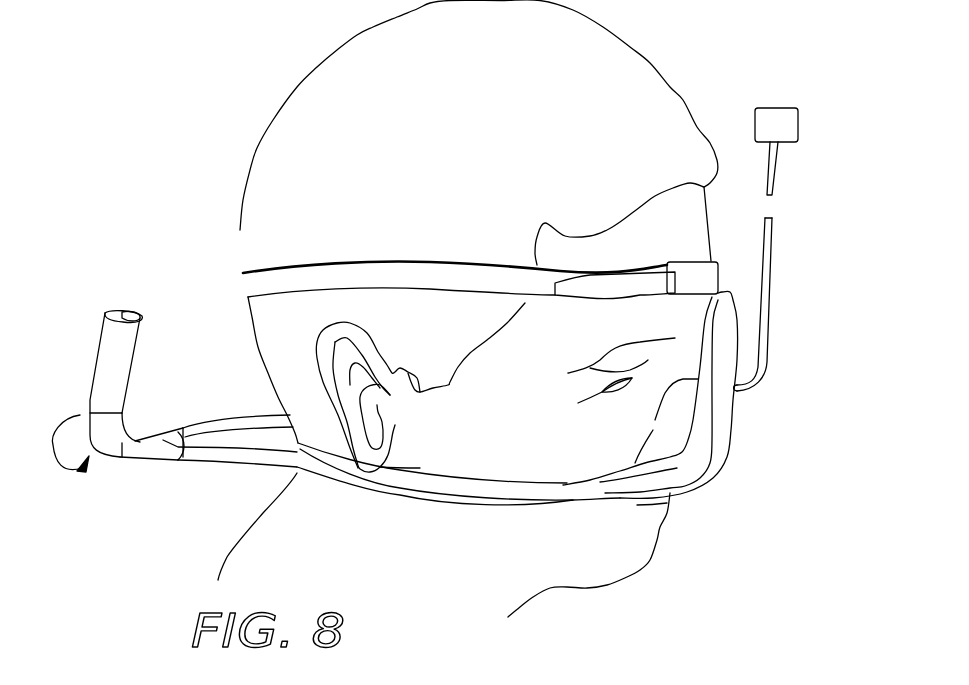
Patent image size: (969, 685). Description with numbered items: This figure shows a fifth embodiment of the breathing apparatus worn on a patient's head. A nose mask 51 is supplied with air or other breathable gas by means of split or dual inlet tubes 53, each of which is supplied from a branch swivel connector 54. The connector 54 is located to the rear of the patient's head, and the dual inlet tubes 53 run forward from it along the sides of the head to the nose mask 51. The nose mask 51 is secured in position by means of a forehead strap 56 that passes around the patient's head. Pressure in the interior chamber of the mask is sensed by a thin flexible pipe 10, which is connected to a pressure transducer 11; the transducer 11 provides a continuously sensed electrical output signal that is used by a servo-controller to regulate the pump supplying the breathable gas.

The thin flexible pipe 10 is at (780, 272).
The pressure transducer 11 is at (777, 118).
The nose mask 51 is at (735, 428).
The split or dual inlet tubes 53 is at (493, 492).
The branch swivel connector 54 is at (107, 448).
The forehead strap 56 is at (692, 280).